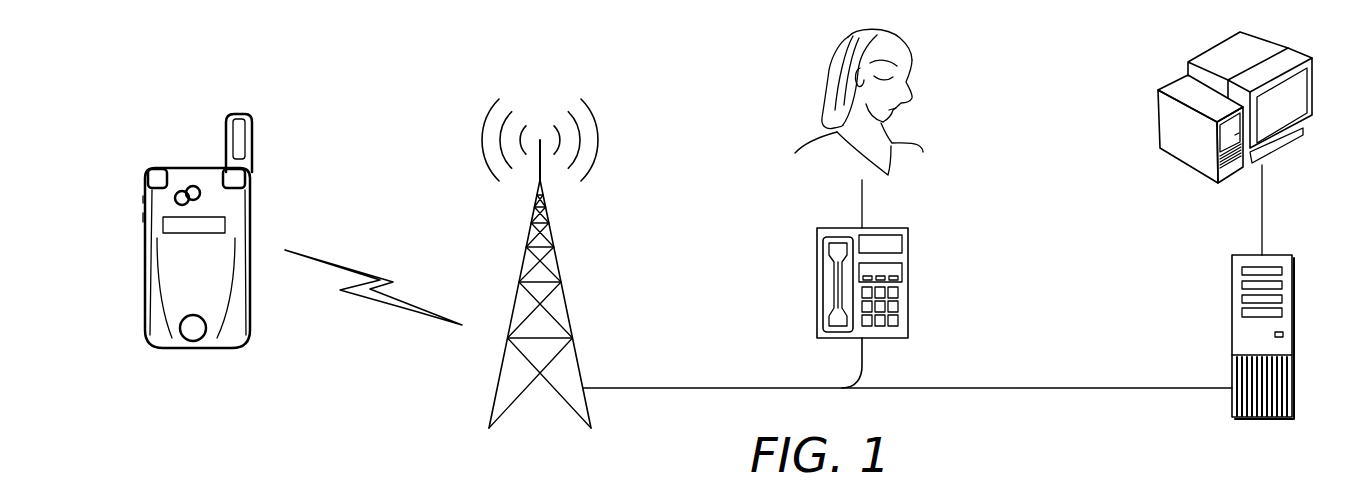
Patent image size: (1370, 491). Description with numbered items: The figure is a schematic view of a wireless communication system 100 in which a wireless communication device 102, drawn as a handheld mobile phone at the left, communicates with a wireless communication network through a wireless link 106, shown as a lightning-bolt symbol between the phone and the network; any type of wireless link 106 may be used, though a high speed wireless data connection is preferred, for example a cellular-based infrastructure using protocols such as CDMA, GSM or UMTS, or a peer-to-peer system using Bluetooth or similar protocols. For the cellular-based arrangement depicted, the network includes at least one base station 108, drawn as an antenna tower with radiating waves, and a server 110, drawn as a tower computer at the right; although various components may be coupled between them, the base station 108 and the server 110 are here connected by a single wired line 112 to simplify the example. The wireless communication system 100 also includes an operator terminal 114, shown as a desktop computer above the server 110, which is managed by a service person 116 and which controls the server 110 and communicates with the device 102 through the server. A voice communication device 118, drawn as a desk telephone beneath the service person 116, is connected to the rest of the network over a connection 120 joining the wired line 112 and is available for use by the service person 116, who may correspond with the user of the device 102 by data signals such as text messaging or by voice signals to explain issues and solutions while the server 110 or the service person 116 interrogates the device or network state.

The wireless communication system 100 is at (151, 59).
The wireless communication device 102 is at (143, 255).
The wireless link 106 is at (338, 265).
The base station 108 is at (560, 283).
The server 110 is at (1232, 337).
The wired line 112 is at (703, 366).
The operator terminal 114 is at (1160, 123).
The service person 116 is at (832, 61).
The voice communication device 118 is at (817, 283).
The telephone line 120 is at (866, 362).